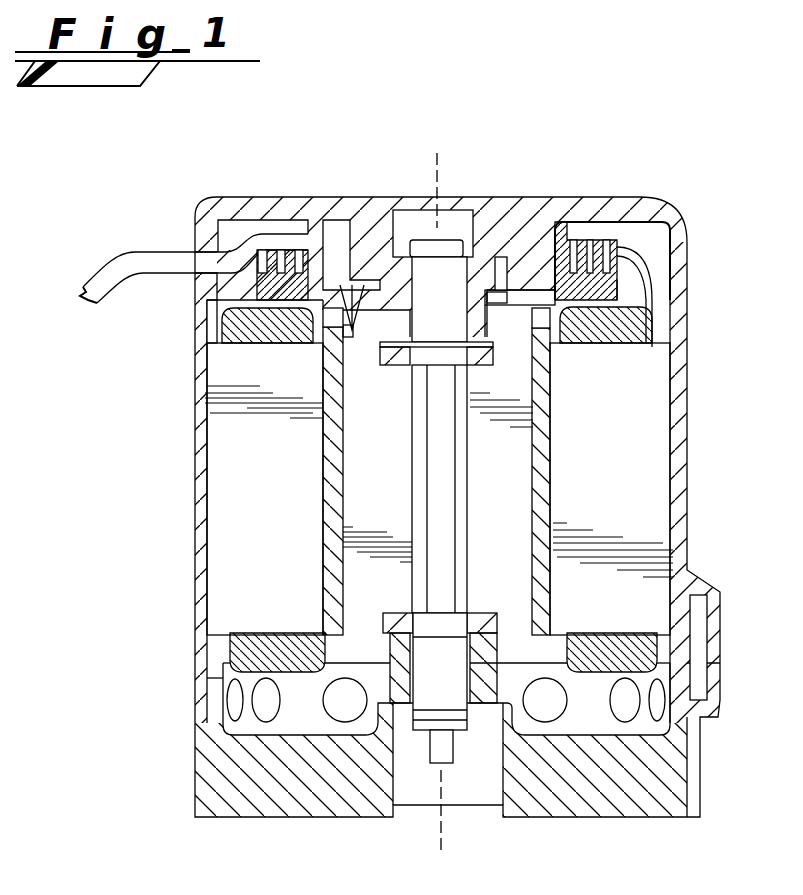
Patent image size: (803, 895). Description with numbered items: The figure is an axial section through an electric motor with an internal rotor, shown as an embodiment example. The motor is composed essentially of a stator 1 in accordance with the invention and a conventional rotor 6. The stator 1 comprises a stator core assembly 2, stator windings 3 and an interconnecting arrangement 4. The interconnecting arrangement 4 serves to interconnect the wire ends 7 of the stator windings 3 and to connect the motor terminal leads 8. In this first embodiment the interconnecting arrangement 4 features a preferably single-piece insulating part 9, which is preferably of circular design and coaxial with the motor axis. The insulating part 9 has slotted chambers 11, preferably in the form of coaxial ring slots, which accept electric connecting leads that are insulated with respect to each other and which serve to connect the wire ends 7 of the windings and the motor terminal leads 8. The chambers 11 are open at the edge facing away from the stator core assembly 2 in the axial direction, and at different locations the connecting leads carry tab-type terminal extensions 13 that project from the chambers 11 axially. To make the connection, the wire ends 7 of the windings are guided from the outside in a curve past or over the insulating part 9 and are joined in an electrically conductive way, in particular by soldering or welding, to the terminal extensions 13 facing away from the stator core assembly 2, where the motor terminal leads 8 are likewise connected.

The stator 1 is at (498, 218).
The stator core assembly 2 is at (627, 490).
The stator windings 3 is at (628, 330).
The interconnecting arrangement 4 is at (620, 287).
The rotor 6 is at (400, 487).
The wire ends 7 is at (640, 252).
The motor terminal leads 8 is at (243, 252).
The insulating part 9 is at (250, 277).
The chambers 11 is at (574, 240).
The terminal extensions 13 is at (299, 250).